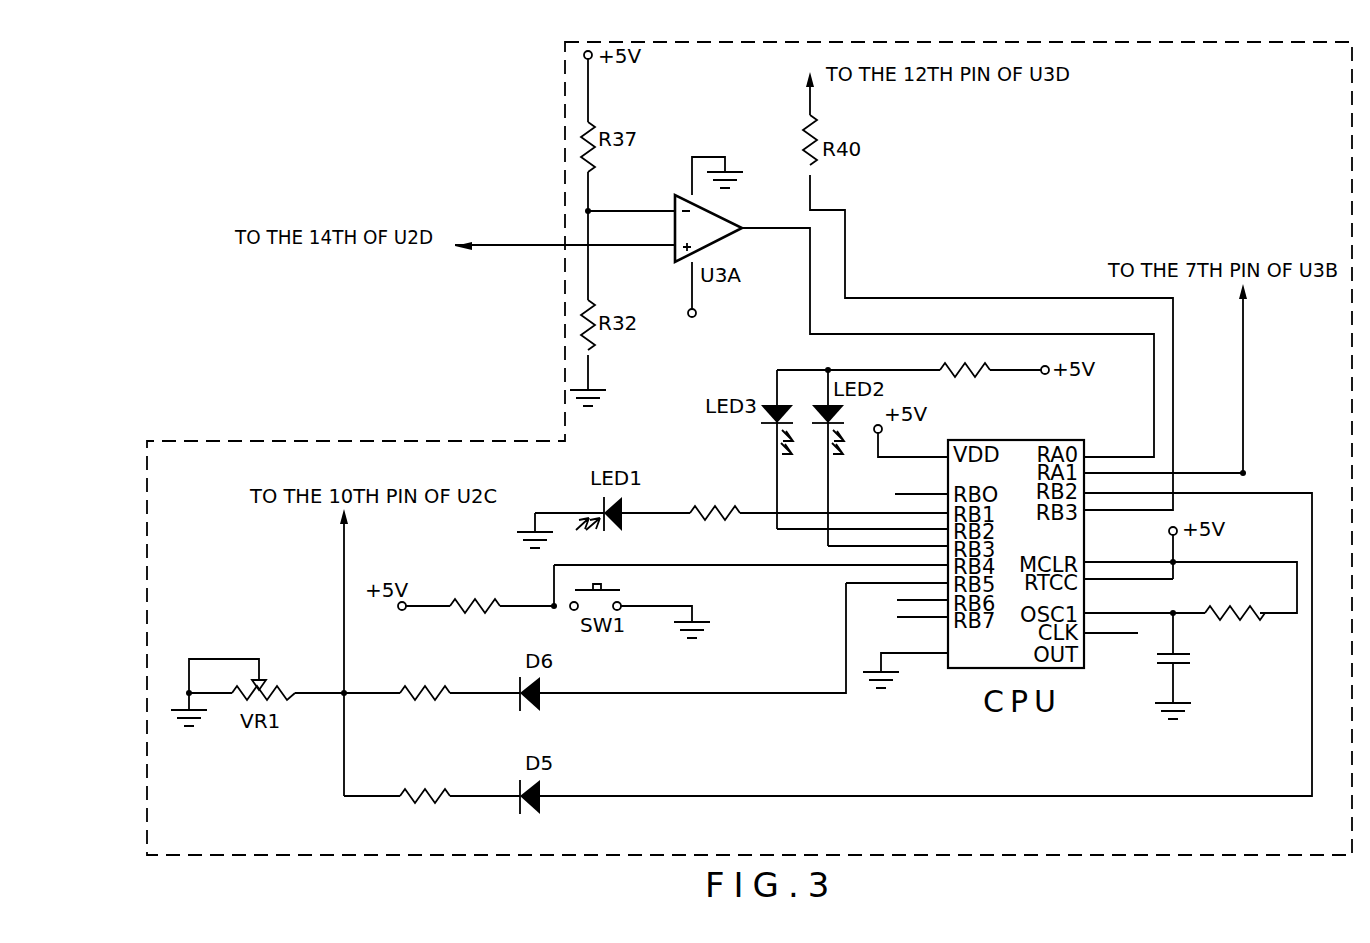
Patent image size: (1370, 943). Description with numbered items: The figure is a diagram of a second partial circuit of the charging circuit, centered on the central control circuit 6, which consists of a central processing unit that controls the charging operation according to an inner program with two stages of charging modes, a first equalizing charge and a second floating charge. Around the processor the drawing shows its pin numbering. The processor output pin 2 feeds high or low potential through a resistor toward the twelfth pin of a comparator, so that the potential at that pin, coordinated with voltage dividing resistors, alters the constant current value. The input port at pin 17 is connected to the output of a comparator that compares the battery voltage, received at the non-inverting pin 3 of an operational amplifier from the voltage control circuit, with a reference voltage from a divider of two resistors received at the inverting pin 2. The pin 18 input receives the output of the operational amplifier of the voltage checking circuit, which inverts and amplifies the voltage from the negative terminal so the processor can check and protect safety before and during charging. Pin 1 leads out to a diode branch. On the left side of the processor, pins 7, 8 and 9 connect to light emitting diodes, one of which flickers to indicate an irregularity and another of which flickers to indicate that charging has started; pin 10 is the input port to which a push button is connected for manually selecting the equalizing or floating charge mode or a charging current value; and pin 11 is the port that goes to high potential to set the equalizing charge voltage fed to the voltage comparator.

The central control circuit 6 is at (310, 456).
The CPU pin 1 (RB2) 1 is at (926, 635).
The pin 2 is at (631, 197).
The op-amp pin 3 (non-inverting input) 3 is at (565, 235).
The CPU pin 7 (RB1) 7 is at (844, 504).
The CPU pin 8 (RB2) 8 is at (862, 521).
The CPU pin 9 (RB3) 9 is at (888, 539).
The CPU pin 10 (RB4) 10 is at (751, 556).
The CPU pin 11 (RB5) 11 is at (897, 574).
The CPU pin 17 (RA0) 17 is at (948, 343).
The CPU pin 18 (RA1) 18 is at (1165, 380).